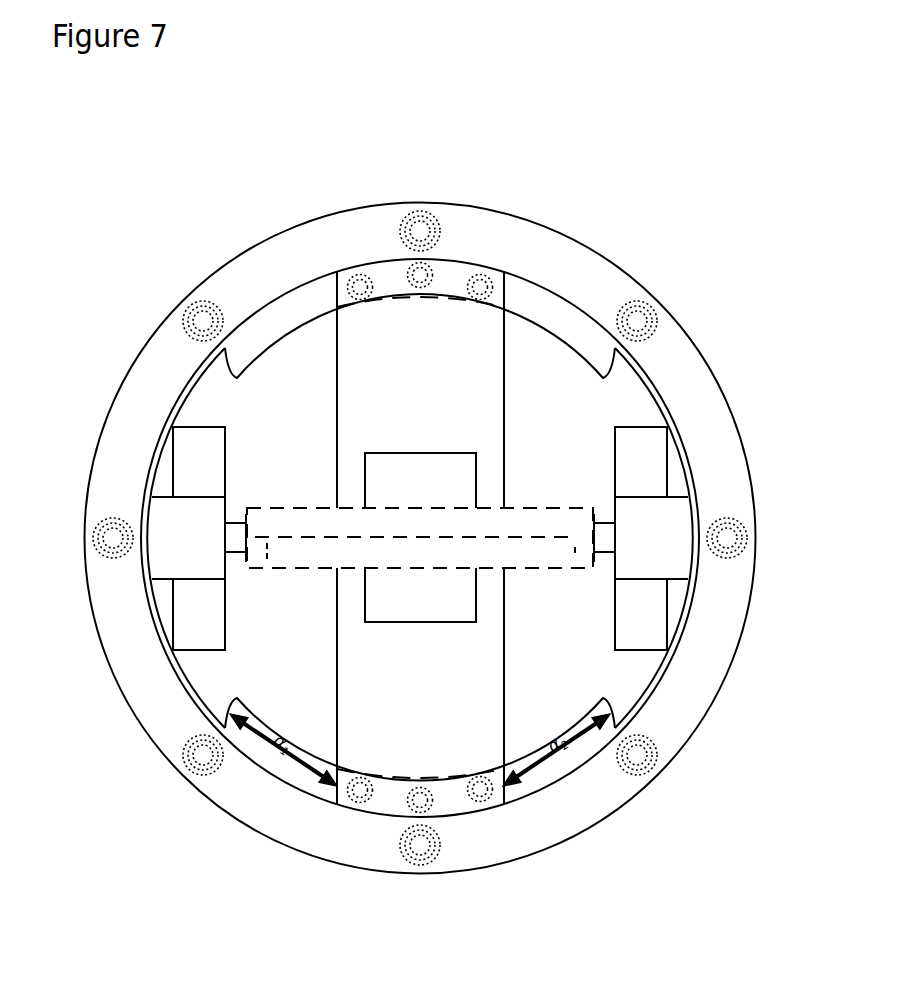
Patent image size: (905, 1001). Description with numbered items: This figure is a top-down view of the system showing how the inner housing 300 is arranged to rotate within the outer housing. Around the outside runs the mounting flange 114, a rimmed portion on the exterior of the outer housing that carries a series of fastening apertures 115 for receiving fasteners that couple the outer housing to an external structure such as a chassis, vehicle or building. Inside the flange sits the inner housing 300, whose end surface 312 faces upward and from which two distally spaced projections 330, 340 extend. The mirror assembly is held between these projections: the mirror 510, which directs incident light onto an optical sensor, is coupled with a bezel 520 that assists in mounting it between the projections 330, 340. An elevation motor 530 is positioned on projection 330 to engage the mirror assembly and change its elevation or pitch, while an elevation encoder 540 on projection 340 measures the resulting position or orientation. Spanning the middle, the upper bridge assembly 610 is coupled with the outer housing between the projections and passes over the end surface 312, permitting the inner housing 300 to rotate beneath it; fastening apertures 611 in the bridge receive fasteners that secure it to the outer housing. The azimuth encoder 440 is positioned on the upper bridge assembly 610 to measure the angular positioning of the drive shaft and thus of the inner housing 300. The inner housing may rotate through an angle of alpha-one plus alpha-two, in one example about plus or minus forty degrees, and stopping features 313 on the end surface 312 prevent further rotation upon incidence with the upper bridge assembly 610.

The mounting flange 114 is at (140, 394).
The fastening apertures 115 is at (113, 542).
The inner housing 300 is at (264, 421).
The end surface 312 is at (282, 315).
The stopping features 313 is at (608, 362).
The projection 330 is at (181, 451).
The projection 340 is at (627, 451).
The azimuth encoder 440 is at (404, 483).
The mirror 510 is at (535, 563).
The bezel 520 is at (252, 535).
The elevation motor 530 is at (171, 548).
The elevation encoder 540 is at (638, 548).
The upper bridge assembly 610 is at (404, 393).
The fastening apertures 611 is at (423, 275).